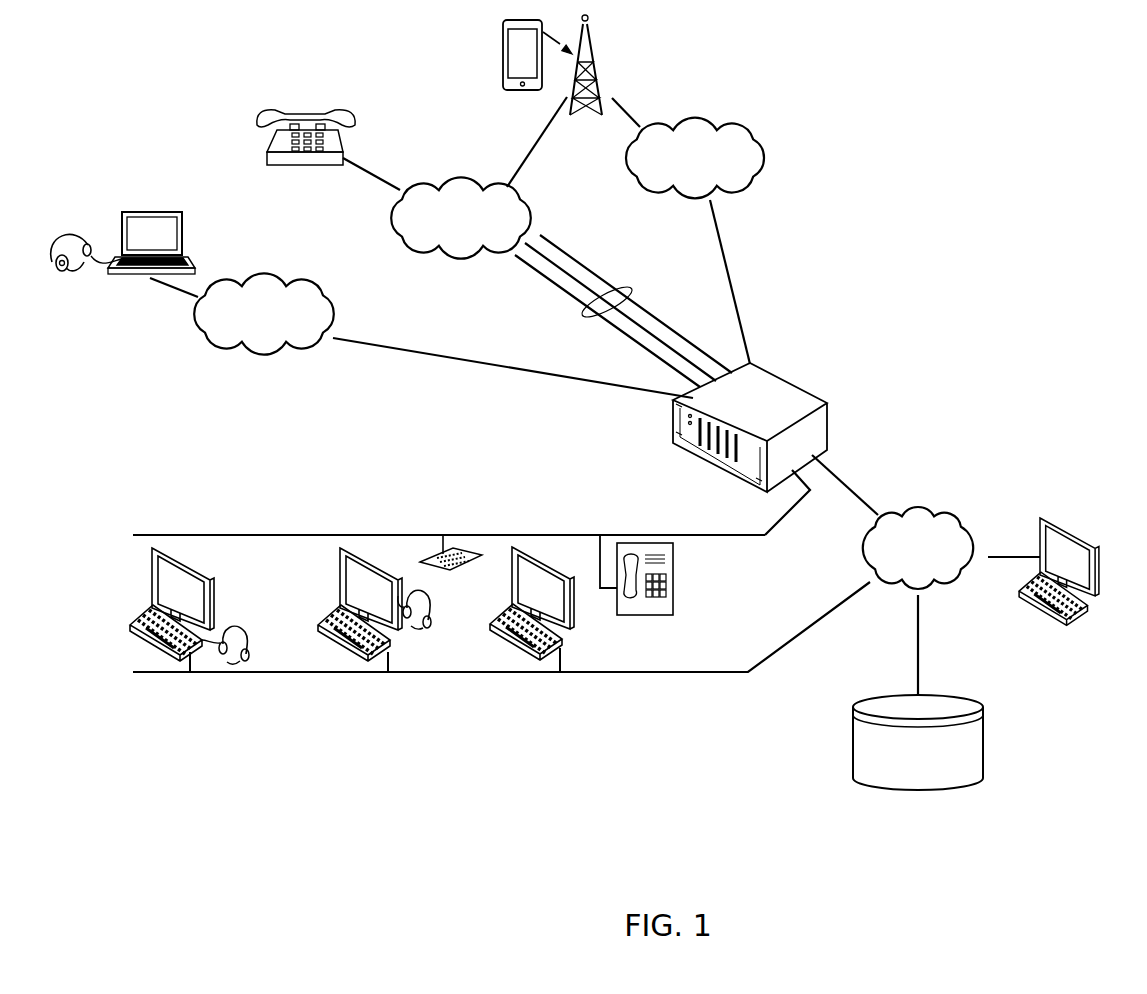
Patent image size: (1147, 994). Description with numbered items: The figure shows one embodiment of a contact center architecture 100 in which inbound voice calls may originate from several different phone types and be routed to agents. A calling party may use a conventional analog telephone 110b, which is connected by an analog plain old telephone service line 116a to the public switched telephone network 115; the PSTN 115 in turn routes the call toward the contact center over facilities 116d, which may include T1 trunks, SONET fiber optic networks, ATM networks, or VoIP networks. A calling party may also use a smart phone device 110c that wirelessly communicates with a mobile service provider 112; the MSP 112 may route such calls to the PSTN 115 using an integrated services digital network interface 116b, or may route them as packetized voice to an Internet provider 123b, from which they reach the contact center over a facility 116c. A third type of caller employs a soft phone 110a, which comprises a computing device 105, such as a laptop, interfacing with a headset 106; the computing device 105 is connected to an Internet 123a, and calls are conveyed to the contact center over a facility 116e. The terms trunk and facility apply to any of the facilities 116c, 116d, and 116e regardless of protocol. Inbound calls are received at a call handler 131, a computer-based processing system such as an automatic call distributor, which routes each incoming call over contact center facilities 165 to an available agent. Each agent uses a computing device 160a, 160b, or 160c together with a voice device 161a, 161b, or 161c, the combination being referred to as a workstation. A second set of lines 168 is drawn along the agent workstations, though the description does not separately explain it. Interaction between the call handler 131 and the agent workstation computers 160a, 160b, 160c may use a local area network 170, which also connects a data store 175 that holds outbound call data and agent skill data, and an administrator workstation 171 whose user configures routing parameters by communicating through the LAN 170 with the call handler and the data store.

The contact center architecture 100 is at (918, 158).
The computing device 105 is at (121, 238).
The headset 106 is at (65, 271).
The soft phone 110a is at (150, 202).
The conventional analog telephone 110b is at (344, 150).
The smart phone device 110c is at (503, 60).
The mobile service provider 112 is at (593, 78).
The public switched telephone network 115 is at (446, 244).
The analog plain old telephone service line 116a is at (377, 181).
The integrated services digital network interface 116b is at (548, 124).
The facility 116c is at (730, 284).
The facilities 116d is at (583, 314).
The facility 116e is at (478, 360).
The Internet 123a is at (244, 343).
The Internet provider 123b is at (675, 186).
The call handler 131 is at (742, 439).
The computing device 160a is at (212, 597).
The computing device 160b is at (407, 569).
The computing device 160c is at (570, 602).
The voice device 161a is at (252, 642).
The voice device 161b is at (433, 608).
The voice device 161c is at (656, 615).
The contact center facilities 165 is at (708, 533).
The data facility / LAN 168 is at (715, 673).
The local area network 170 is at (853, 576).
The administrator workstation 171 is at (1100, 568).
The data store 175 is at (903, 776).